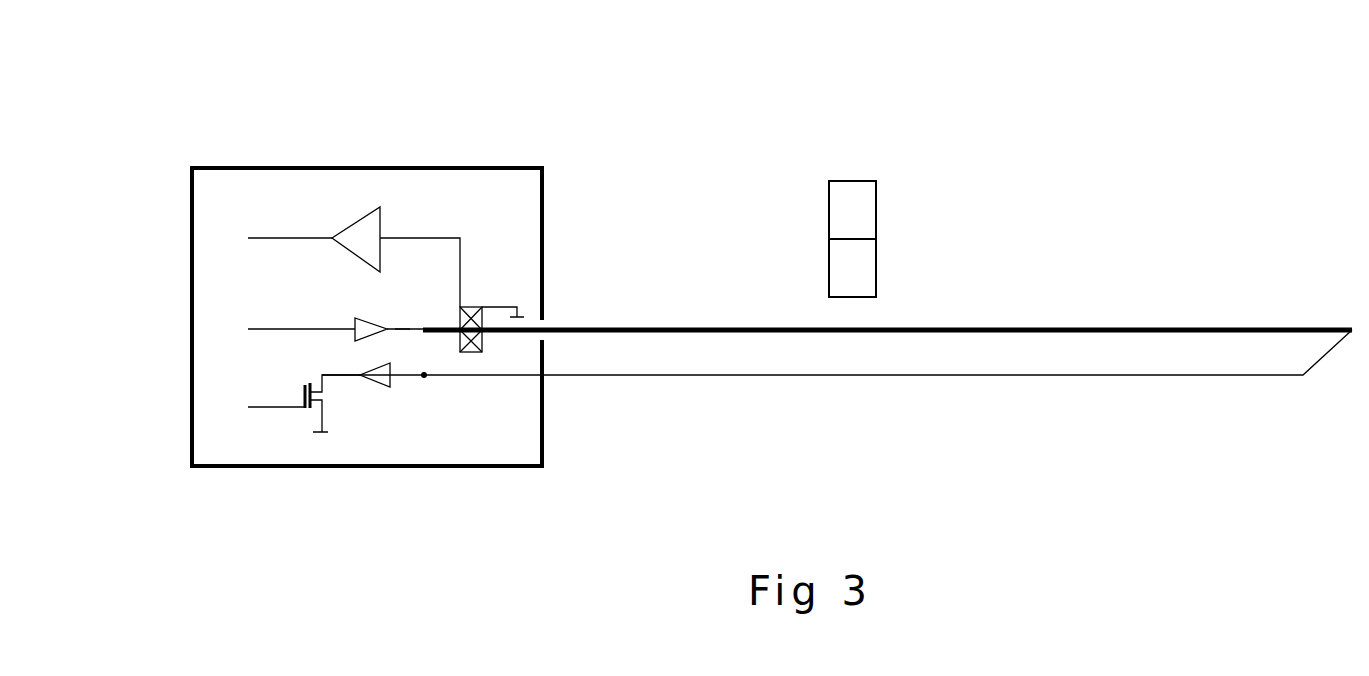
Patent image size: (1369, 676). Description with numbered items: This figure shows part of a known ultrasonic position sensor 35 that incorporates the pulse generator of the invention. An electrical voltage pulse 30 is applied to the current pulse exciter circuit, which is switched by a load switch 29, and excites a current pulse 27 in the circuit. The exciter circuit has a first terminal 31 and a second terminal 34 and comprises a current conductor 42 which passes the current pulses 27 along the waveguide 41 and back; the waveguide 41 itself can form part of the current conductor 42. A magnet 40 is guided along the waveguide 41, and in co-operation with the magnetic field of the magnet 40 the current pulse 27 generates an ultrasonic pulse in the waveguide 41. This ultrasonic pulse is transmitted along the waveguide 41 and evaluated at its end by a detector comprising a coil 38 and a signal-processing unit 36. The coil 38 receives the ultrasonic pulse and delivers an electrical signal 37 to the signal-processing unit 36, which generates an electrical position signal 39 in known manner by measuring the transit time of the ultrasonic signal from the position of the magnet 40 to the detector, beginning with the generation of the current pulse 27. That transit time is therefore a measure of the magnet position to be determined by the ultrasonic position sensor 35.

The current pulse 27 is at (367, 330).
The load switch 29 is at (303, 408).
The electrical voltage pulse 30 is at (270, 407).
The first terminal 31 is at (402, 329).
The second terminal 34 is at (412, 375).
The ultrasonic position sensor 35 is at (272, 168).
The signal-processing unit 36 is at (368, 238).
The electrical signal 37 is at (415, 238).
The coil 38 is at (483, 307).
The electrical position signal 39 is at (273, 238).
The magnet 40 is at (852, 180).
The waveguide 41 is at (1118, 328).
The current conductor 42 is at (1118, 377).